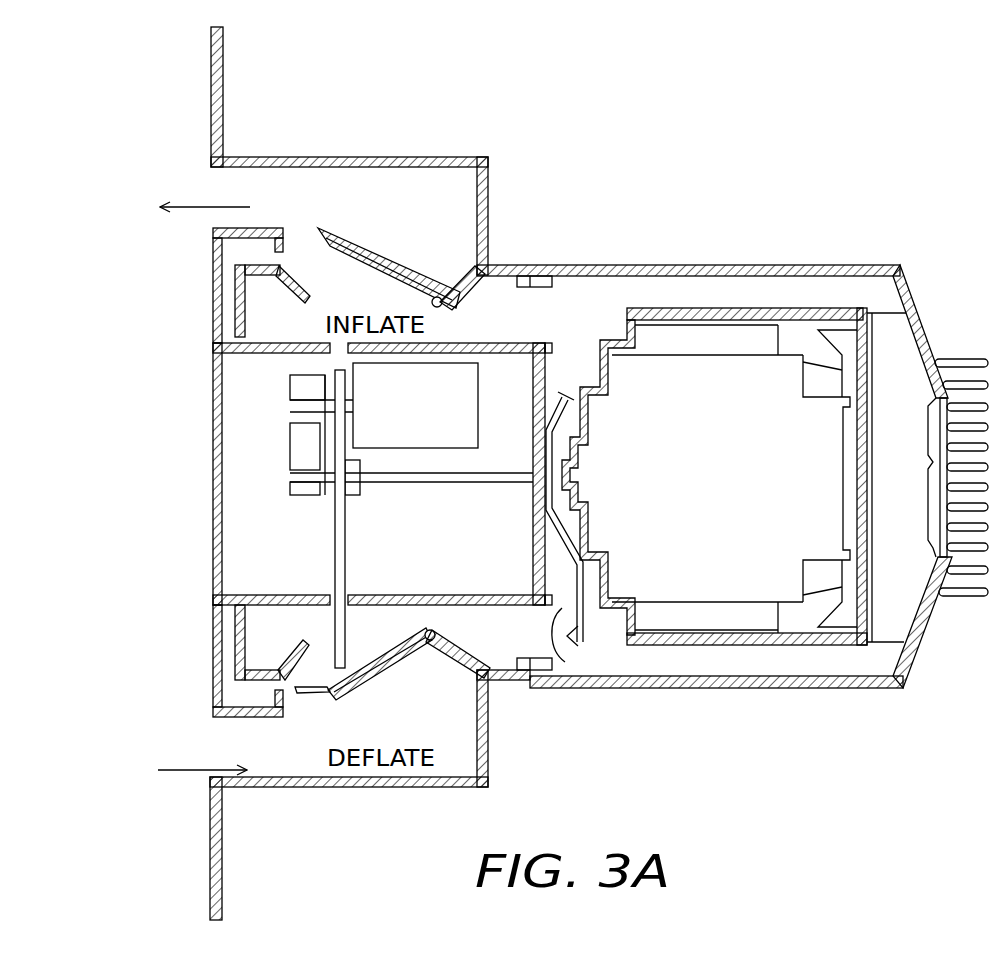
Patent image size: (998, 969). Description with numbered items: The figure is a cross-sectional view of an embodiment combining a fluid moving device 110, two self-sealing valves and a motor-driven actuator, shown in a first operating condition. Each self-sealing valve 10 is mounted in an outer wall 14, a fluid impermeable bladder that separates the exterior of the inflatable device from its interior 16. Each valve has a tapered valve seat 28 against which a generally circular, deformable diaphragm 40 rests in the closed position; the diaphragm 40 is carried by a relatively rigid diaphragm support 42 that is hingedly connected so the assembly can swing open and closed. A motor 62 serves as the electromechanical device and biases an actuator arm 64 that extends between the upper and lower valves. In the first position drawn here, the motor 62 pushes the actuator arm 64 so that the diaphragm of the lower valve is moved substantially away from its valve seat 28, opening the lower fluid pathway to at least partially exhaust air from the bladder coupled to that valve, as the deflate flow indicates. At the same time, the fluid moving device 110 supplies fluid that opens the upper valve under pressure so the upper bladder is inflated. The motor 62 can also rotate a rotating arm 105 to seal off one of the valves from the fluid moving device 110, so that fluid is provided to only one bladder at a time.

The self-sealing valve 10 is at (312, 207).
The outer wall 14 is at (223, 120).
The interior 16 is at (192, 496).
The tapered valve seat 28 is at (295, 298).
The diaphragm 40 is at (323, 225).
The diaphragm support 42 is at (443, 303).
The motor 62 is at (440, 450).
The actuator arm 64 is at (347, 541).
The rotating arm 105 is at (585, 590).
The fluid moving device 110 is at (752, 492).